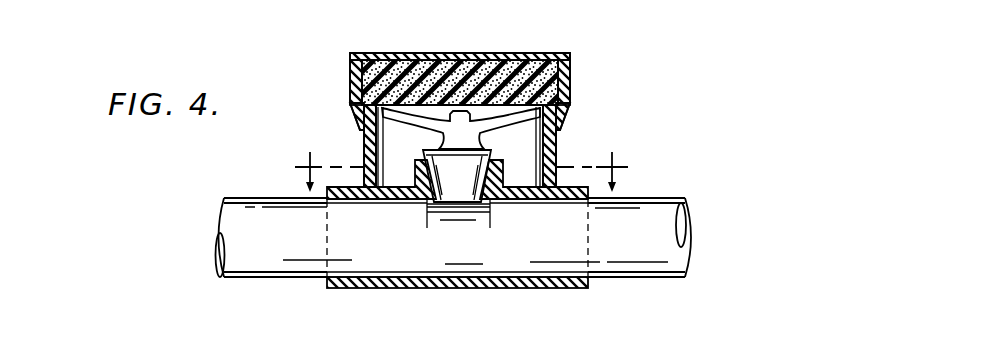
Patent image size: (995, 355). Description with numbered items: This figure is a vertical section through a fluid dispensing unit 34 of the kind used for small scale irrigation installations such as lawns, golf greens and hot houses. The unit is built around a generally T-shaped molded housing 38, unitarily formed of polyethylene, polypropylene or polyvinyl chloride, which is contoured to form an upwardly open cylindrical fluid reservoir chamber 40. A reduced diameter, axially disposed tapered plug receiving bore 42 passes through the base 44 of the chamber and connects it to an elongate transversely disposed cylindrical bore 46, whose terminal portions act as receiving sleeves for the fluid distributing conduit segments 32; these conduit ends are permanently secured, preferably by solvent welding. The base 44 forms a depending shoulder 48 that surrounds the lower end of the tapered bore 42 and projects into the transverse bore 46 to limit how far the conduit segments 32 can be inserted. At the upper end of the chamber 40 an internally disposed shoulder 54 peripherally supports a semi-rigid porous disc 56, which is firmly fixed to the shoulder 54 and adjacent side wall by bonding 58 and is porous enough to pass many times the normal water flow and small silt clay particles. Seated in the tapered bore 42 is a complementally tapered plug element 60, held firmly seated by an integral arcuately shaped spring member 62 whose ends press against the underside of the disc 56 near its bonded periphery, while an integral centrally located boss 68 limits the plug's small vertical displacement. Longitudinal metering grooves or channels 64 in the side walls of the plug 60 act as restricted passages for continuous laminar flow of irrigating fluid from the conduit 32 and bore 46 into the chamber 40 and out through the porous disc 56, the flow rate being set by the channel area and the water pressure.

The fluid distributing conduit segments 32 is at (258, 199).
The fluid dispensing unit 34 is at (589, 56).
The housing 38 is at (364, 130).
The fluid reservoir chamber 40 is at (528, 141).
The tapered plug receiving bore 42 is at (492, 150).
The base 44 is at (400, 194).
The transverse cylindrical bore 46 is at (481, 262).
The depending shoulder 48 is at (487, 210).
The internally disposed shoulder 54 is at (558, 124).
The porous disc 56 is at (522, 60).
The bonding 58 is at (350, 80).
The tapered plug element 60 is at (461, 165).
The arcuately shaped spring member 62 is at (414, 113).
The metering grooves or channels 64 is at (421, 201).
The centrally located boss 68 is at (470, 110).